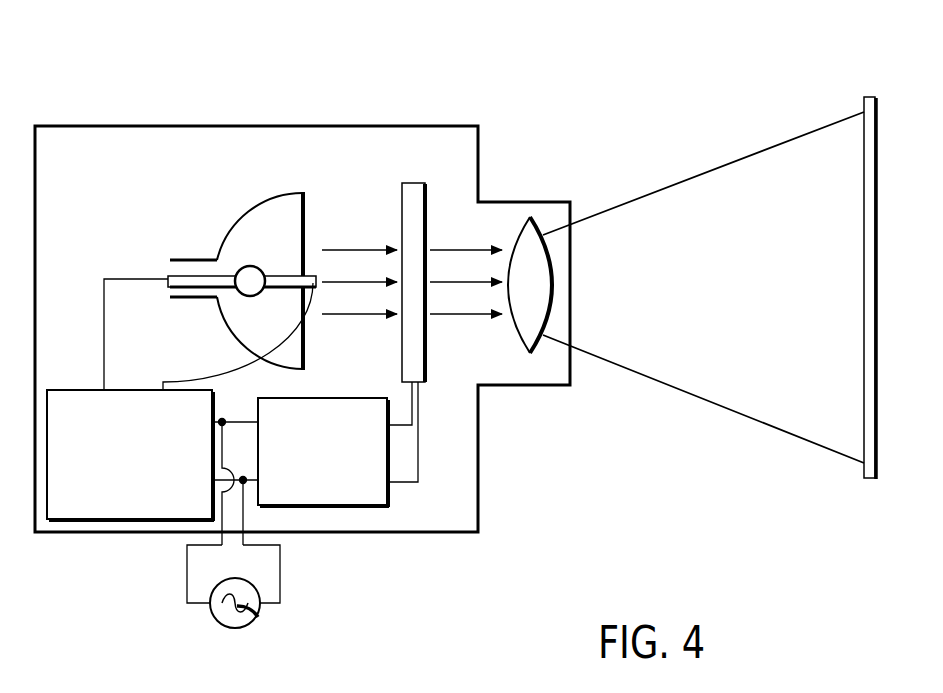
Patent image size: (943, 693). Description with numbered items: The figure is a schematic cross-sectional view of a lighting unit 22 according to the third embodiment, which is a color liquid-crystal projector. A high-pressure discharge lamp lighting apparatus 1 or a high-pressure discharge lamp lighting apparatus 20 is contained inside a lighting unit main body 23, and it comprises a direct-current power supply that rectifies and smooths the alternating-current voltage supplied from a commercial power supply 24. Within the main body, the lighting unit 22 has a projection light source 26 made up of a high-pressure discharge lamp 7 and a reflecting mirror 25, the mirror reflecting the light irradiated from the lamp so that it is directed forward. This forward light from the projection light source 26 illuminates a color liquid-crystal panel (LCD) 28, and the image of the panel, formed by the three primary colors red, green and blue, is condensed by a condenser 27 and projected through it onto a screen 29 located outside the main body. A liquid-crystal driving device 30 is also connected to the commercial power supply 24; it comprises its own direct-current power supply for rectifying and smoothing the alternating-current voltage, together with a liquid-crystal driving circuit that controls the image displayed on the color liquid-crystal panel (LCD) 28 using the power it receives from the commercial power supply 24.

The lighting unit 22 is at (300, 106).
The lighting unit main body 23 is at (161, 126).
The reflecting mirror 25 is at (254, 204).
The projection light source 26 is at (215, 228).
The high-pressure discharge lamp 7 is at (266, 262).
The high-pressure discharge lamp lighting apparatus 1 is at (130, 489).
The high-pressure discharge lamp lighting apparatus 20 is at (117, 525).
The commercial power supply 24 is at (262, 611).
The color liquid-crystal panel (LCD) 28 is at (402, 187).
The liquid-crystal driving device 30 is at (388, 497).
The condenser 27 is at (520, 343).
The screen 29 is at (864, 378).